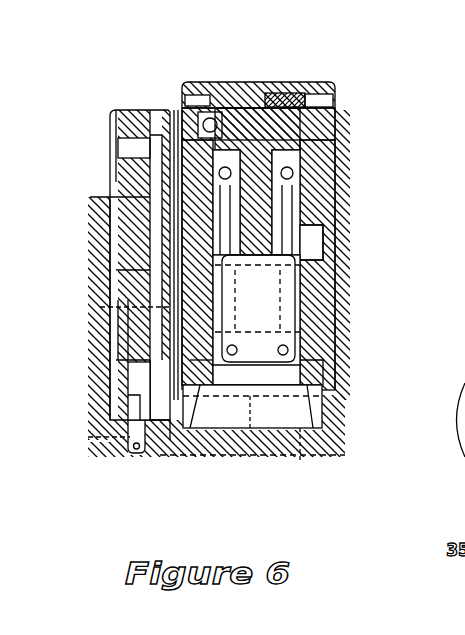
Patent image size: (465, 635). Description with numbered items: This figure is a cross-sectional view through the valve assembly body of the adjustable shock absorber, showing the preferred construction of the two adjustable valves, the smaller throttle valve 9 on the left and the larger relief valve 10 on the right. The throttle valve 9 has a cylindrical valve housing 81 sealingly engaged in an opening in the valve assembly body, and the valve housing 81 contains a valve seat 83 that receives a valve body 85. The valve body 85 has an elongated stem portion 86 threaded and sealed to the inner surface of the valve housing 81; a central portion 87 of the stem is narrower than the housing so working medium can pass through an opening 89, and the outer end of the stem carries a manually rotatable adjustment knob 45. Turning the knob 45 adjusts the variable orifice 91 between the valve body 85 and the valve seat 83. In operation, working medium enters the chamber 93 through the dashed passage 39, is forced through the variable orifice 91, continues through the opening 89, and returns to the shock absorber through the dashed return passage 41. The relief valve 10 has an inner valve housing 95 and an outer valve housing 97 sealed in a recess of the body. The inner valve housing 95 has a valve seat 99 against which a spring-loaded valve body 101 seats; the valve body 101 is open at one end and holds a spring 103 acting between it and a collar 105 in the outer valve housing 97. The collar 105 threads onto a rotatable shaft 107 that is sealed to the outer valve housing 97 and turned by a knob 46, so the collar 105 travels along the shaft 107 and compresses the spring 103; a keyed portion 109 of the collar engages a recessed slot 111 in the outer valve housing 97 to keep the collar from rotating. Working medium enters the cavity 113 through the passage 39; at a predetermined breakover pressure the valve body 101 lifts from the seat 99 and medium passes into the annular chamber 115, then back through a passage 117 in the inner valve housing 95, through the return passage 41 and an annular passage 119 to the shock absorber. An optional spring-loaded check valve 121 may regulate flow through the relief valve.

The throttle valve 9 is at (125, 86).
The relief valve 10 is at (300, 74).
The adjustment knob 45 is at (100, 158).
The rotatable knob 46 is at (323, 78).
The keyed portion 109 is at (305, 149).
The outer valve housing 97 is at (350, 148).
The spring 103 is at (345, 149).
The collar 105 is at (328, 172).
The rotatable shaft 107 is at (308, 194).
The recessed slot 111 is at (335, 216).
The annular passage 119 is at (326, 308).
The annular chamber 115 is at (296, 372).
The inner valve housing 95 is at (330, 361).
The valve seat 99 is at (330, 384).
The valve body 101 is at (323, 401).
The cavity 113 is at (300, 461).
The passage 117 is at (283, 424).
The spring-loaded check valve 121 is at (203, 372).
The chamber 93 is at (160, 444).
The variable orifice 91 is at (124, 398).
The passage 39 is at (113, 408).
The valve body 85 is at (120, 368).
The valve seat 83 is at (100, 357).
The central portion 87 is at (100, 322).
The return passage 41 is at (100, 307).
The opening 89 is at (108, 280).
The valve housing 81 is at (110, 251).
The stem portion 86 is at (113, 186).